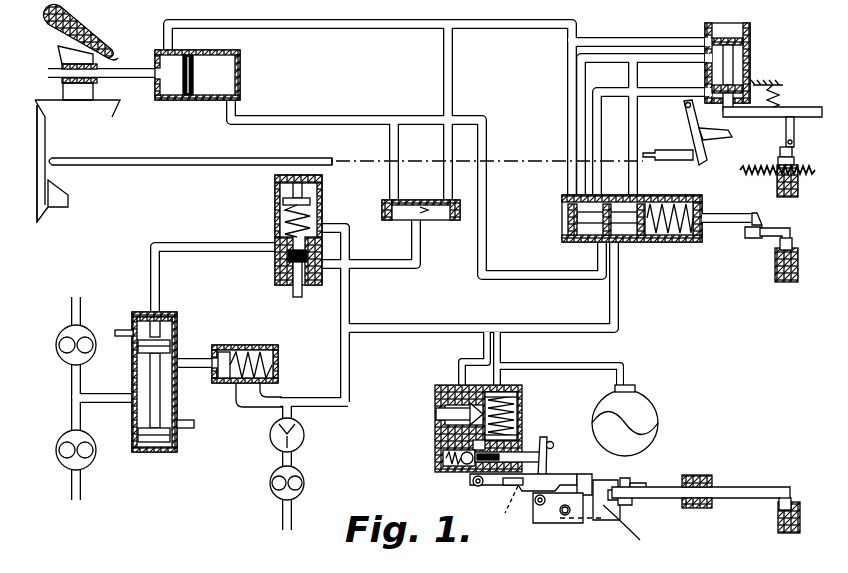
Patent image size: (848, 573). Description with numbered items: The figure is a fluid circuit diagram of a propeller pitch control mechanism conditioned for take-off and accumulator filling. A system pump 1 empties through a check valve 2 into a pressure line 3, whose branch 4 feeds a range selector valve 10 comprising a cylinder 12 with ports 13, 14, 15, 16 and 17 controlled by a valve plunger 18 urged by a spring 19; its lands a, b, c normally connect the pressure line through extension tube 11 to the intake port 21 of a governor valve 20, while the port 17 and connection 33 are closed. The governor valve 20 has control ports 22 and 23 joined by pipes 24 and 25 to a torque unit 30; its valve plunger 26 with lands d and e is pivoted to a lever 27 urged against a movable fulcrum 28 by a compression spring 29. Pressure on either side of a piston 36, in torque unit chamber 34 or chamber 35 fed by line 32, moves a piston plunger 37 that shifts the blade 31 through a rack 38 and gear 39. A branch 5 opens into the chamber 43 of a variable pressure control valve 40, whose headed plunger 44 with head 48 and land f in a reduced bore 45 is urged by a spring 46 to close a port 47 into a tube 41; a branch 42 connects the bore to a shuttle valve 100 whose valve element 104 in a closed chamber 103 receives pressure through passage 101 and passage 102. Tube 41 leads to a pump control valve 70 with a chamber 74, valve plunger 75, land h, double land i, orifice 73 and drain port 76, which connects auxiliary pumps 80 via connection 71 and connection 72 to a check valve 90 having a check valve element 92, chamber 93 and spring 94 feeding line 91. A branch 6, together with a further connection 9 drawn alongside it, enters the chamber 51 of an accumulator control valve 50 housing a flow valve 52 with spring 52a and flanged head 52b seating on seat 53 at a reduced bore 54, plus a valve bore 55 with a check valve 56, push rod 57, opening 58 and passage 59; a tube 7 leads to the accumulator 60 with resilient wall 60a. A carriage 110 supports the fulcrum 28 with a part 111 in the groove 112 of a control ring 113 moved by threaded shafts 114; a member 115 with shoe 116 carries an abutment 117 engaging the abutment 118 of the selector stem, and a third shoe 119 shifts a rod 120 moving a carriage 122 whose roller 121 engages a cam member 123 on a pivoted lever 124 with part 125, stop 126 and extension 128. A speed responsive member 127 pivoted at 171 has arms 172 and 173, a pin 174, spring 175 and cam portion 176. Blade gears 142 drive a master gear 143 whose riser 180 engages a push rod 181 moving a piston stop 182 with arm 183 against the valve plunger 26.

The system pump 1 is at (272, 494).
The check valve 2 is at (300, 437).
The pressure line 3 is at (338, 406).
The branch 4 is at (556, 324).
The branch 5 is at (351, 304).
The branch 6 is at (502, 347).
The tube 7 is at (626, 364).
The conduit 9 is at (480, 362).
The range selector valve 10 is at (566, 208).
The extension tube 11 is at (640, 150).
The cylinder 12 is at (566, 240).
The port 13 is at (617, 245).
The port 14 is at (636, 196).
The port 15 is at (587, 192).
The port 16 is at (600, 245).
The port 17 is at (568, 195).
The valve plunger 18 is at (679, 243).
The spring 19 is at (678, 202).
The governor valve 20 is at (707, 17).
The intake port 21 is at (700, 62).
The control port 22 is at (695, 93).
The control port 23 is at (705, 42).
The pipe 24 is at (603, 92).
The pipe 25 is at (352, 22).
The valve plunger 26 is at (736, 58).
The lever 27 is at (808, 107).
The movable fulcrum 28 is at (795, 125).
The compression spring 29 is at (780, 88).
The torque unit 30 is at (240, 59).
The blade 31 is at (104, 60).
The line 32 is at (270, 125).
The connection 33 is at (567, 120).
The torque unit chamber 34 is at (170, 90).
The chamber 35 is at (228, 81).
The piston 36 is at (190, 100).
The piston plunger 37 is at (138, 78).
The rack 38 is at (50, 69).
The gear 39 is at (63, 85).
The variable pressure control valve 40 is at (311, 309).
The tube 41 is at (183, 243).
The branch 42 is at (368, 264).
The chamber 43 is at (293, 190).
The headed plunger 44 is at (283, 212).
The reduced bore 45 is at (349, 236).
The spring 46 is at (312, 220).
The port 47 is at (288, 252).
The head 48 is at (312, 190).
The accumulator control valve 50 is at (436, 400).
The chamber 51 is at (517, 396).
The flow valve 52 is at (512, 396).
The spring 52a is at (517, 412).
The flanged head 52b is at (520, 372).
The seat 53 is at (462, 405).
The reduced bore 54 is at (440, 411).
The valve bore 55 is at (440, 472).
The check valve 56 is at (462, 477).
The push rod 57 is at (543, 440).
The opening 58 is at (458, 428).
The passage 59 is at (443, 452).
The accumulator 60 is at (657, 432).
The resilient wall 60a is at (655, 418).
The pump control valve 70 is at (172, 315).
The connection 71 is at (99, 394).
The connection 72 is at (197, 370).
The orifice 73 is at (124, 330).
The chamber 74 is at (140, 420).
The valve plunger 75 is at (138, 368).
The drain port 76 is at (193, 428).
The auxiliary pumps 80 is at (57, 338).
The check valve 90 is at (278, 362).
The line 91 is at (241, 408).
The check valve element 92 is at (228, 352).
The chamber 93 is at (256, 352).
The spring 94 is at (273, 352).
The shuttle valve 100 is at (437, 249).
The passage 101 is at (444, 144).
The passage 102 is at (390, 142).
The closed chamber 103 is at (436, 208).
The valve element 104 is at (412, 218).
The carriage 110 is at (787, 129).
The part 111 is at (780, 153).
The groove 112 is at (778, 160).
The control ring 113 is at (778, 193).
The threaded shafts 114 is at (741, 175).
The member 115 is at (786, 233).
The shoe 116 is at (793, 245).
The pin or abutment 117 is at (748, 238).
The abutment 118 is at (762, 228).
The third shoe 119 is at (790, 496).
The rod 120 is at (745, 486).
The roller 121 is at (533, 515).
The carriage 122 is at (550, 520).
The movable cam member 123 is at (505, 508).
The pivoted lever 124 is at (490, 488).
The part 125 is at (545, 456).
The stop 126 is at (554, 445).
The speed responsive member 127 is at (600, 521).
The extension 128 is at (584, 482).
The blade gears 142 is at (104, 114).
The master gear 143 is at (44, 222).
The pivot 171 is at (568, 516).
The arm 172 is at (624, 506).
The arm 173 is at (621, 476).
The pin 174 is at (634, 490).
The spring 175 is at (598, 520).
The cam portion 176 is at (632, 532).
The cam or riser 180 is at (69, 203).
The push rod 181 is at (140, 170).
The piston stop 182 is at (703, 158).
The arm 183 is at (735, 138).
The land a is at (568, 222).
The land b is at (604, 202).
The land c is at (641, 240).
The land d is at (745, 87).
The land e is at (745, 40).
The land f is at (288, 258).
The land h is at (172, 452).
The double land i is at (172, 343).